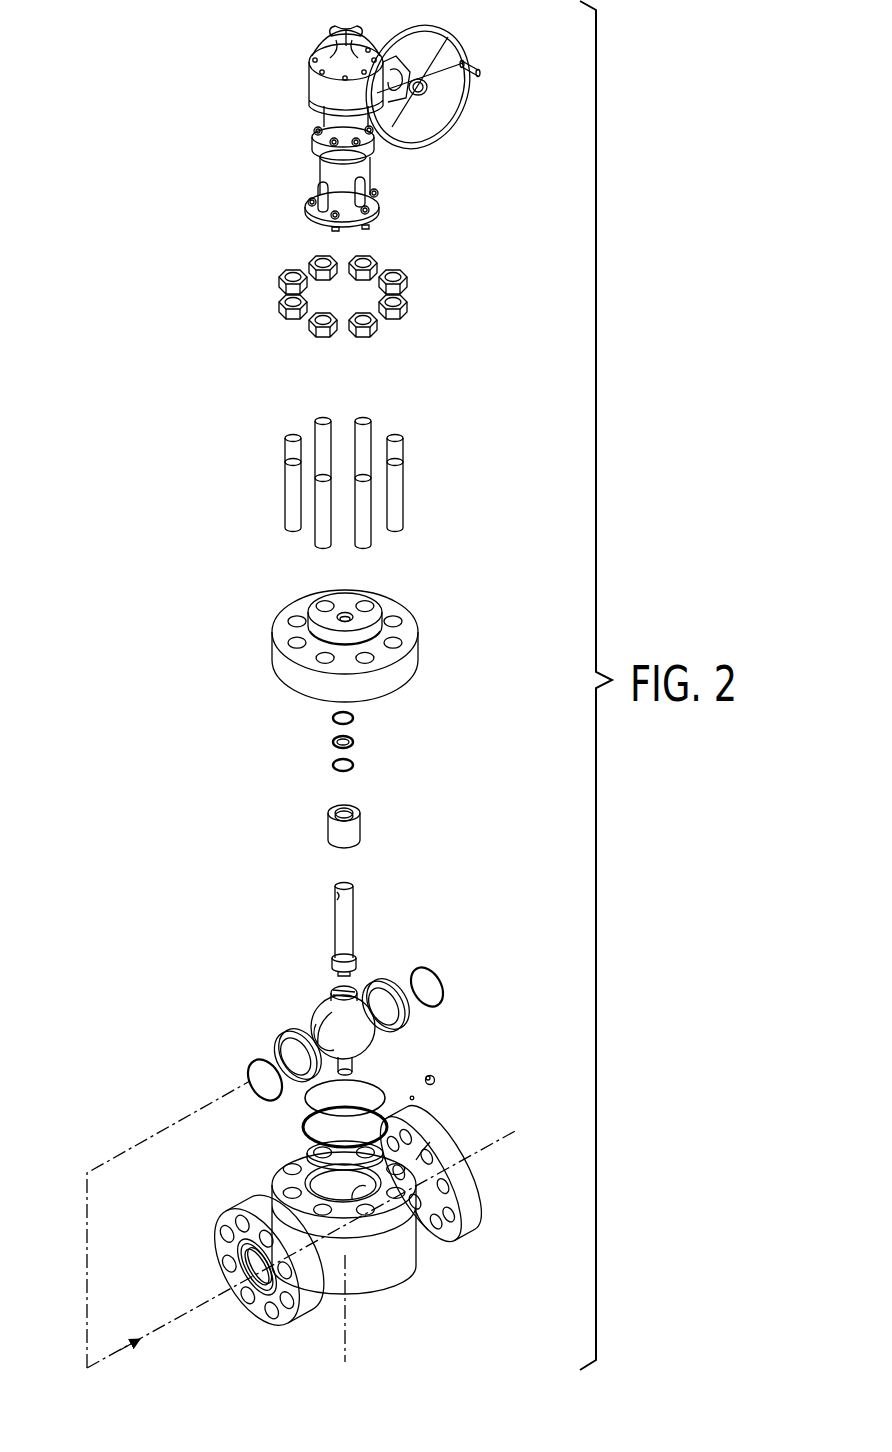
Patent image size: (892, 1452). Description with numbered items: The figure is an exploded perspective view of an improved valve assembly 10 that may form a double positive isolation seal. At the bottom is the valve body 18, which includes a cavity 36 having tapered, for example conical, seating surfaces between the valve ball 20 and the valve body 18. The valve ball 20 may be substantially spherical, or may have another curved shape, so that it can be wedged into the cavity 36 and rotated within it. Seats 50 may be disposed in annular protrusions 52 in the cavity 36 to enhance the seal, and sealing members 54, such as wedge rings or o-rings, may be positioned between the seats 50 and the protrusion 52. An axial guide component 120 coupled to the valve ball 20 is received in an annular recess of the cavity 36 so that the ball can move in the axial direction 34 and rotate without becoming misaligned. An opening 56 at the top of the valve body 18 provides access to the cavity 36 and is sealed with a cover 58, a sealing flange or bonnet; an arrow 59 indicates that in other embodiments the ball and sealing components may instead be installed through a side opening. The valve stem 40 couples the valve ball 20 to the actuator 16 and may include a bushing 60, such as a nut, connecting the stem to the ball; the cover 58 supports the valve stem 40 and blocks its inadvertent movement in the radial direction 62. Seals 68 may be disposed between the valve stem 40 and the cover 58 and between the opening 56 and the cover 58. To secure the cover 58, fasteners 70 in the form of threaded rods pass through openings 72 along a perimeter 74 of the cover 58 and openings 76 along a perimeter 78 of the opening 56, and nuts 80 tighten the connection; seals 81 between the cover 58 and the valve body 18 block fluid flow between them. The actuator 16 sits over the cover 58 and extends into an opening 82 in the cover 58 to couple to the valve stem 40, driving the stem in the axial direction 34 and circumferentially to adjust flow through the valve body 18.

The valve assembly 10 is at (453, 197).
The actuator 16 is at (337, 187).
The valve body 18 is at (330, 1217).
The valve ball 20 is at (331, 1040).
The axial direction 34 is at (347, 1322).
The cavity 36 is at (342, 1188).
The valve stem 40 is at (343, 928).
The seats 50 is at (389, 982).
The protrusions 52 is at (362, 1188).
The sealing members 54 is at (439, 978).
The opening 56 is at (326, 1195).
The cover 58 is at (336, 629).
The arrow 59 is at (87, 1270).
The bushing 60 is at (343, 838).
The radial direction 62 is at (495, 1142).
The seals 68 is at (334, 763).
The fasteners 70 is at (405, 490).
The openings 72 is at (290, 638).
The perimeter 74 is at (386, 606).
The openings 76 is at (289, 1170).
The perimeter 78 is at (304, 1210).
The nuts 80 is at (394, 317).
The seals 81 is at (372, 1112).
The opening 82 is at (343, 611).
The axial guide component 120 is at (350, 1066).